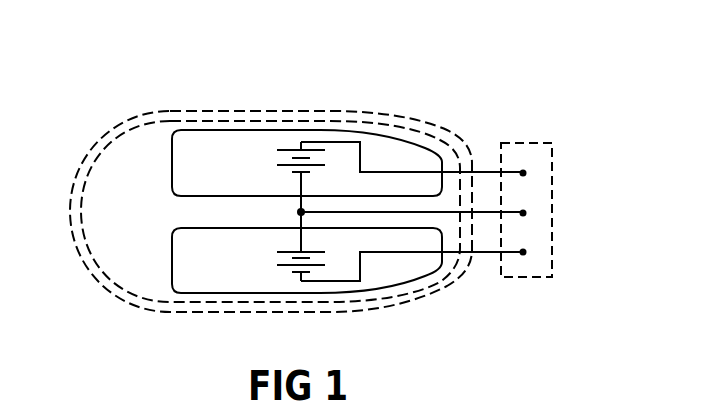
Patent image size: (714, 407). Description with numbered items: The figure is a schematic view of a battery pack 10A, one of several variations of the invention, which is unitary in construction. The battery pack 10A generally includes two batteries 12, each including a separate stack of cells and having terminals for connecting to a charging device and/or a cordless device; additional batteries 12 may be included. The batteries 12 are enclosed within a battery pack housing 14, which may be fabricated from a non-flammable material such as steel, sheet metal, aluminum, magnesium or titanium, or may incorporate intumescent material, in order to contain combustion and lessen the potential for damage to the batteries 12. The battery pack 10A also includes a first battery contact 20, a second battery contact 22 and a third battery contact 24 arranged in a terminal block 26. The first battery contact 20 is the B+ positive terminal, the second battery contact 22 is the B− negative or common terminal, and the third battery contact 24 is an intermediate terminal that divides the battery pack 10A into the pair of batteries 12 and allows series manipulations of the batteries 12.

The battery pack 10A is at (273, 186).
The battery 12 is at (213, 147).
The battery pack housing 14 is at (433, 125).
The first battery contact 20 is at (523, 173).
The second battery contact 22 is at (523, 252).
The third battery contact 24 is at (523, 213).
The terminal block 26 is at (559, 171).